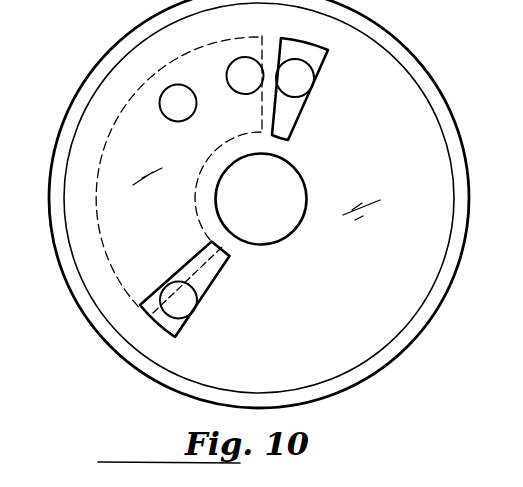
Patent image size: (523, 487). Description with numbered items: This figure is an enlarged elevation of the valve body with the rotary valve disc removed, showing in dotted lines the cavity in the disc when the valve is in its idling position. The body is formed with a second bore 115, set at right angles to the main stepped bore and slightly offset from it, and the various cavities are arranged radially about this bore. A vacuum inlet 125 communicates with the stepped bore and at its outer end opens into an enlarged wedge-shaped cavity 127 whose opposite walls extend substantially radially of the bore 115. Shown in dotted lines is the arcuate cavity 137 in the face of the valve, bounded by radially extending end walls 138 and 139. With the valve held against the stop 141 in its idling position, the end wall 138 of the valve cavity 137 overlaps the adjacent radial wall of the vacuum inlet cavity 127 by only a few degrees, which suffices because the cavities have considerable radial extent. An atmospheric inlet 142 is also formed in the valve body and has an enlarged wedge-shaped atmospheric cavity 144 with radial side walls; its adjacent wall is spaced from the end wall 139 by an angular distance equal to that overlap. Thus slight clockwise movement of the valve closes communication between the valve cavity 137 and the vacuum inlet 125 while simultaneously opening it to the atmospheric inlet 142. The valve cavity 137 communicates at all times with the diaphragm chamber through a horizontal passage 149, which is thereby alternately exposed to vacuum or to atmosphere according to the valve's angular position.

The second bore 115 is at (380, 48).
The vacuum inlet 125 is at (198, 308).
The wedge-shaped cavity 127 is at (176, 327).
The arcuate cavity 137 is at (100, 186).
The radial end wall 138 is at (185, 283).
The radial end wall 139 is at (262, 116).
The stop 141 is at (229, 64).
The atmospheric inlet 142 is at (308, 85).
The wedge-shaped atmospheric cavity 144 is at (312, 56).
The horizontal passage 149 is at (166, 110).